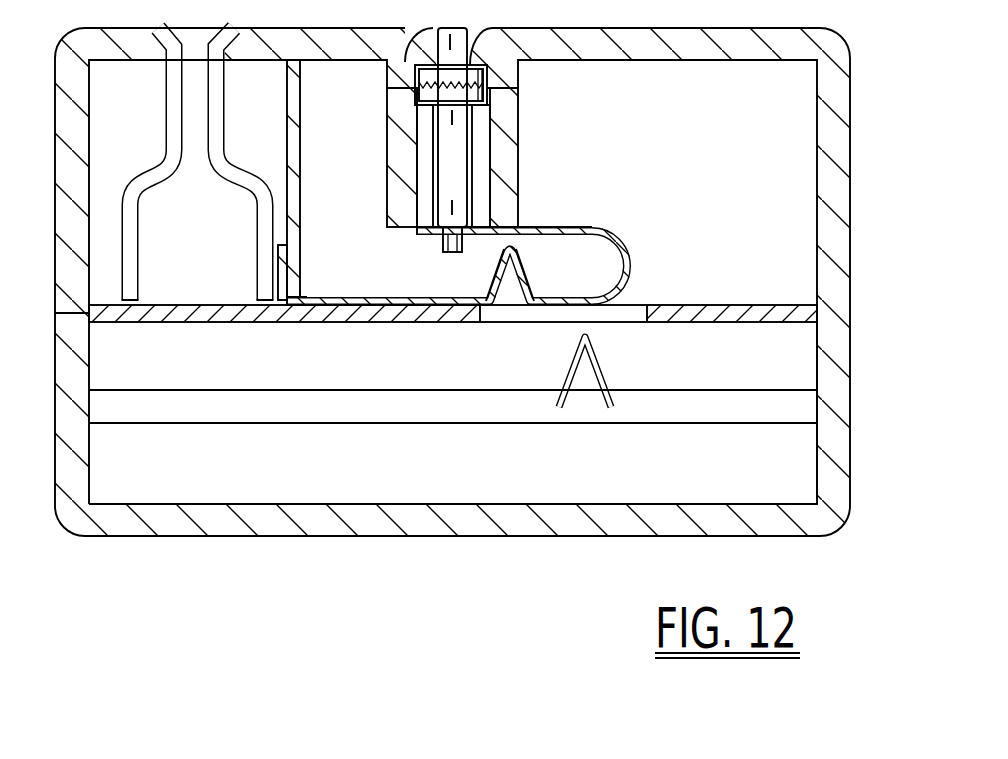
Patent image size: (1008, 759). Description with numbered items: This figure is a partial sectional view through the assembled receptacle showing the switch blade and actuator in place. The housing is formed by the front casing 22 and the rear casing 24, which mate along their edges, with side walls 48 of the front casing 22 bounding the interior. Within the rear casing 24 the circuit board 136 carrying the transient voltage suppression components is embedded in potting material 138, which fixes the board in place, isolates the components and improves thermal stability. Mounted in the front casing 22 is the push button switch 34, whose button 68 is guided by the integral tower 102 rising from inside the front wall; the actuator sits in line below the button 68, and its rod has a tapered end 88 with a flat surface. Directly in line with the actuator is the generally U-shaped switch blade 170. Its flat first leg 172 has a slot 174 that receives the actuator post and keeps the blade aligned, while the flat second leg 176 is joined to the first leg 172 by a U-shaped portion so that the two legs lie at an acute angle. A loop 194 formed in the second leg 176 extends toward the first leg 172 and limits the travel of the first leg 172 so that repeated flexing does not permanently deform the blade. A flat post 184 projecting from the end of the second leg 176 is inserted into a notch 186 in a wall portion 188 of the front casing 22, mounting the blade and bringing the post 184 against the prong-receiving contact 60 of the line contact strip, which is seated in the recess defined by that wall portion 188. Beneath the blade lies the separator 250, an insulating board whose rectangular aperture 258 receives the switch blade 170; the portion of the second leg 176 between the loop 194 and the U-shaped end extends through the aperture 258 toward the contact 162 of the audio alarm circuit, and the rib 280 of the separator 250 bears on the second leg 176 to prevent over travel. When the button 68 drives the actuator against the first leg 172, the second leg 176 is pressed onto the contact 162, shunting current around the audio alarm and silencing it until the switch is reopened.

The front casing 22 is at (848, 228).
The rear casing 24 is at (849, 368).
The side walls 48 is at (833, 466).
The prong-receiving contact 60 is at (225, 117).
The wall portion 188 is at (299, 90).
The flat post 184 is at (277, 245).
The notch 186 is at (303, 296).
The push button switch 34 is at (388, 160).
The slot or aperture 174 is at (518, 163).
The tower 102 is at (667, 85).
The button 68 is at (468, 42).
The tapered end 88 is at (449, 254).
The switch blade 170 is at (491, 273).
The first leg 172 is at (574, 228).
The second leg 176 is at (382, 300).
The loop 194 is at (512, 278).
The separator 250 is at (733, 304).
The rectangular aperture 258 is at (357, 322).
The rib 280 is at (436, 315).
The contact 162 is at (604, 345).
The circuit board 136 is at (704, 405).
The potting material 138 is at (612, 486).